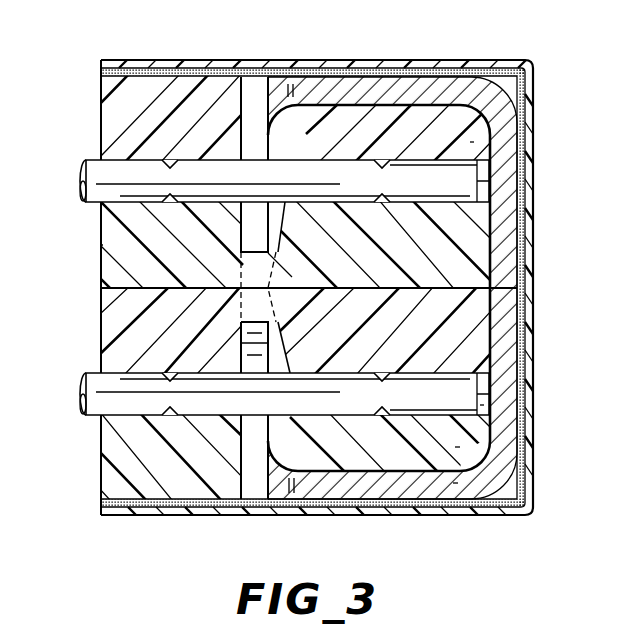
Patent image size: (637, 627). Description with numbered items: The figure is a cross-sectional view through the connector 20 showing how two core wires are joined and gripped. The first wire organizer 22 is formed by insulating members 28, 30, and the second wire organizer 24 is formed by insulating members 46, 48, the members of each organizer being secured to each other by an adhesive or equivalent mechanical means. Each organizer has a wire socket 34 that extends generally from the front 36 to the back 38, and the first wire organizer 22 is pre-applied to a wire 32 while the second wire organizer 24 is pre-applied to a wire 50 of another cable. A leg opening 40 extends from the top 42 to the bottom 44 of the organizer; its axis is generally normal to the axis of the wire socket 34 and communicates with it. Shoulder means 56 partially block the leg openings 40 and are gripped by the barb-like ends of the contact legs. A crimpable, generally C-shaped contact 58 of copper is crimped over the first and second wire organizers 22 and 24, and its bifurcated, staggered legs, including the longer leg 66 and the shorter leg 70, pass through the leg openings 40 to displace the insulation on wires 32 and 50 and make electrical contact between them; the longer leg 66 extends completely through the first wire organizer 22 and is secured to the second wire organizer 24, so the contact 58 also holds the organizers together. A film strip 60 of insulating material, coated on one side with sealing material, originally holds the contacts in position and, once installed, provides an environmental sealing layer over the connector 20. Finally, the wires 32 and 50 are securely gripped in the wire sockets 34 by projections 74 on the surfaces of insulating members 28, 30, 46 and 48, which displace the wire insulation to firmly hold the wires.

The connector 20 is at (343, 516).
The first wire organizer 22 is at (97, 118).
The second wire organizer 24 is at (97, 455).
The insulating member 28 is at (472, 142).
The insulating member 30 is at (478, 260).
The wire 32 is at (83, 180).
The wire socket 34 is at (483, 405).
The front 36 is at (100, 245).
The back 38 is at (497, 225).
The leg opening 40 is at (297, 131).
The top 42 is at (152, 68).
The bottom 44 is at (428, 287).
The insulating member 46 is at (455, 345).
The insulating member 48 is at (458, 448).
The wire 50 is at (83, 388).
The shoulder means 56 is at (250, 303).
The contact 58 is at (455, 483).
The film strip 60 is at (157, 508).
The leg 66 is at (246, 140).
The leg 70 is at (244, 450).
The projections 74 is at (172, 160).